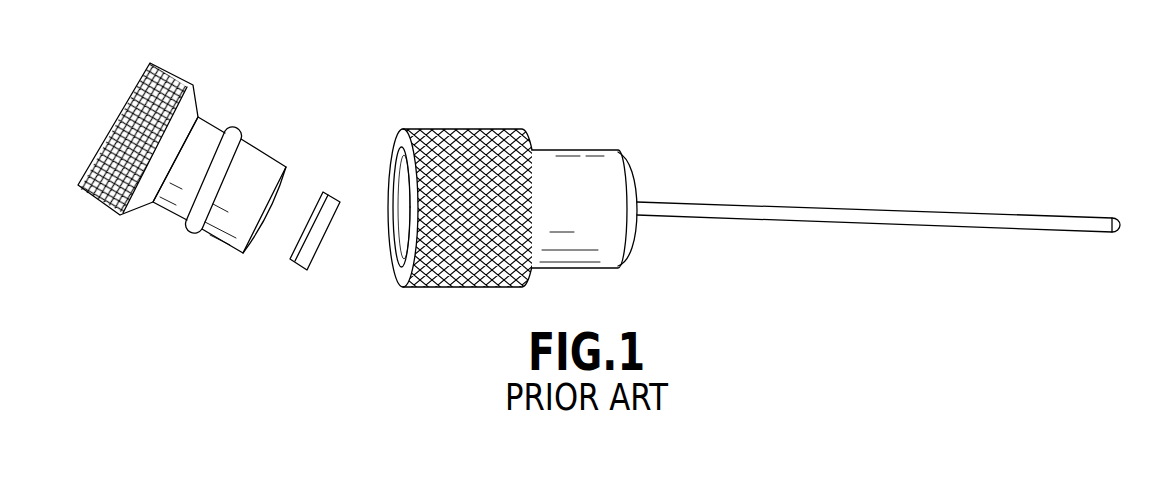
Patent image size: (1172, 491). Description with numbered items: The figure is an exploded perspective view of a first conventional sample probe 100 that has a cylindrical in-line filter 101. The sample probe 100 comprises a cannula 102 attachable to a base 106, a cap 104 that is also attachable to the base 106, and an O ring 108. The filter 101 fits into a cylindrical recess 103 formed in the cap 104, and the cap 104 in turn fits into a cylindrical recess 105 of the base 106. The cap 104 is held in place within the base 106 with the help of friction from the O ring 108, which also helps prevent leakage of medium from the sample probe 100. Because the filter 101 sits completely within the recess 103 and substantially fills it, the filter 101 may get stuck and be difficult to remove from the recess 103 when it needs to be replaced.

The sample probe 100 is at (655, 83).
The in-line filter 101 is at (313, 246).
The cannula 102 is at (791, 213).
The cylindrical recess 103 is at (288, 192).
The cap 104 is at (207, 101).
The cylindrical recess 105 is at (406, 197).
The base 106 is at (476, 131).
The O ring 108 is at (190, 221).